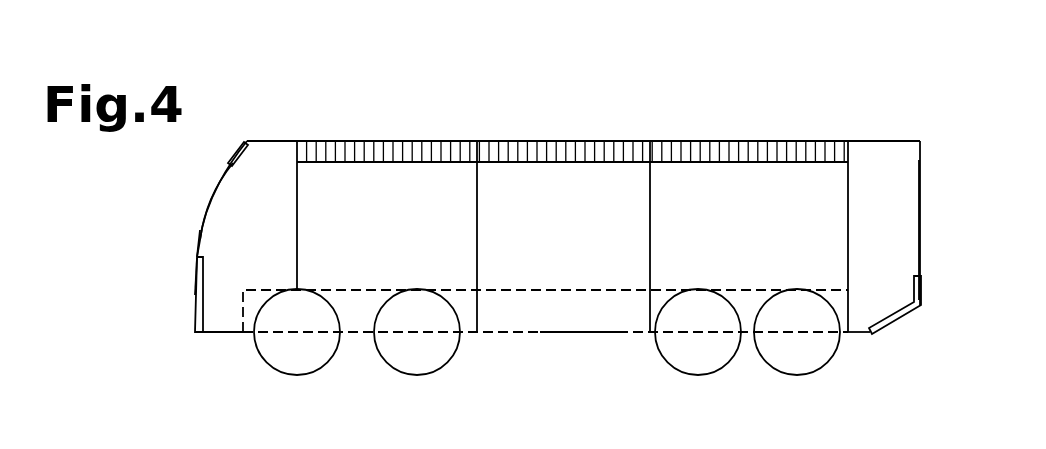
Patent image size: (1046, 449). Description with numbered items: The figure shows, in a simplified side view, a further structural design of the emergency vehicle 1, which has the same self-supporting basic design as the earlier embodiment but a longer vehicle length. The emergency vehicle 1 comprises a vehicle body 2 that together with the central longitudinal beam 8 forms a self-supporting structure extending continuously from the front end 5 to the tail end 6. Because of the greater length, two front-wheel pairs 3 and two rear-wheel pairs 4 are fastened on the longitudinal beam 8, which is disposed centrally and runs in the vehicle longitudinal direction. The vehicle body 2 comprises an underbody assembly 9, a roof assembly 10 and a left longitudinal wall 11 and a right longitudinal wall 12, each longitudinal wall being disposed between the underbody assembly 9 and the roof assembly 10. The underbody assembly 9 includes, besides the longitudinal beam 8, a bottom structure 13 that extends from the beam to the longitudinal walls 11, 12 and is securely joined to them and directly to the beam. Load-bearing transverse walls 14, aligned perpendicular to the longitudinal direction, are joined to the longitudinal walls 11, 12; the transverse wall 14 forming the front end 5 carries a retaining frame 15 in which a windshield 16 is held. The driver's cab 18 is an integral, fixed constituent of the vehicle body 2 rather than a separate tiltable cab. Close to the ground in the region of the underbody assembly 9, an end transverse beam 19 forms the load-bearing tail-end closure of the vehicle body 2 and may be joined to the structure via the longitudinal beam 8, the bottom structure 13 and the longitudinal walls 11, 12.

The emergency vehicle 1 is at (867, 130).
The vehicle body 2 is at (910, 127).
The front-wheel pair 3 is at (290, 359).
The rear-wheel pair 4 is at (690, 358).
The front end 5 is at (195, 202).
The tail end 6 is at (928, 223).
The central longitudinal beam 8 is at (505, 318).
The underbody assembly 9 is at (565, 347).
The roof assembly 10 is at (649, 131).
The left longitudinal wall 11 is at (342, 178).
The right longitudinal wall 12 is at (432, 178).
The bottom structure 13 is at (593, 347).
The transverse wall 14 is at (190, 255).
The retaining frame 15 is at (236, 148).
The windshield 16 is at (200, 232).
The driver's cab 18 is at (266, 174).
The end transverse beam 19 is at (910, 312).